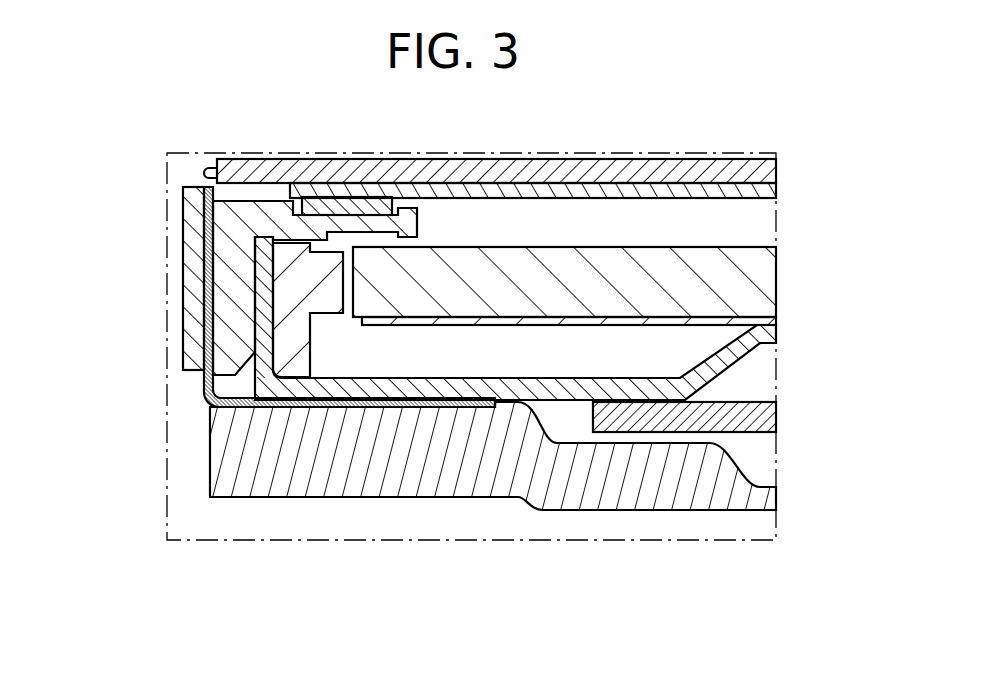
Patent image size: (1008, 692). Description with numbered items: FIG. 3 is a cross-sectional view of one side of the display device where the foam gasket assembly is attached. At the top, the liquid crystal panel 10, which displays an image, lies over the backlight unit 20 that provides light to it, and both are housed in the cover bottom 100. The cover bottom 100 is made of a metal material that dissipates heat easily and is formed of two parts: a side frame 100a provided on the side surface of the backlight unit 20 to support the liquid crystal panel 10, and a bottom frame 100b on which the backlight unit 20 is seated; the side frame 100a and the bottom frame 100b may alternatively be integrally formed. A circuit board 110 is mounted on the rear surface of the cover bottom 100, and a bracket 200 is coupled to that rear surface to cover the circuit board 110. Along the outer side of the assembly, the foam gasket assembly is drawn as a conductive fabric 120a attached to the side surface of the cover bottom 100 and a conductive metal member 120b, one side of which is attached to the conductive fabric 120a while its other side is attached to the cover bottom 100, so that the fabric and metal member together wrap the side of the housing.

The liquid crystal panel 10 is at (788, 160).
The backlight unit 20 is at (788, 247).
The cover bottom 100 is at (494, 432).
The side frame 100a is at (237, 353).
The bottom frame 100b is at (318, 390).
The circuit board 110 is at (776, 416).
The conductive fabric 120a is at (191, 325).
The conductive metal member 120b is at (200, 382).
The bracket 200 is at (468, 470).